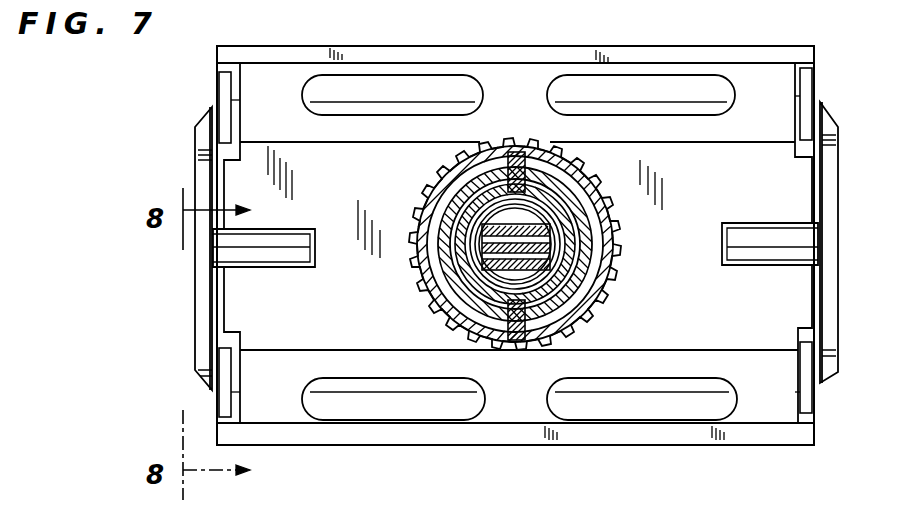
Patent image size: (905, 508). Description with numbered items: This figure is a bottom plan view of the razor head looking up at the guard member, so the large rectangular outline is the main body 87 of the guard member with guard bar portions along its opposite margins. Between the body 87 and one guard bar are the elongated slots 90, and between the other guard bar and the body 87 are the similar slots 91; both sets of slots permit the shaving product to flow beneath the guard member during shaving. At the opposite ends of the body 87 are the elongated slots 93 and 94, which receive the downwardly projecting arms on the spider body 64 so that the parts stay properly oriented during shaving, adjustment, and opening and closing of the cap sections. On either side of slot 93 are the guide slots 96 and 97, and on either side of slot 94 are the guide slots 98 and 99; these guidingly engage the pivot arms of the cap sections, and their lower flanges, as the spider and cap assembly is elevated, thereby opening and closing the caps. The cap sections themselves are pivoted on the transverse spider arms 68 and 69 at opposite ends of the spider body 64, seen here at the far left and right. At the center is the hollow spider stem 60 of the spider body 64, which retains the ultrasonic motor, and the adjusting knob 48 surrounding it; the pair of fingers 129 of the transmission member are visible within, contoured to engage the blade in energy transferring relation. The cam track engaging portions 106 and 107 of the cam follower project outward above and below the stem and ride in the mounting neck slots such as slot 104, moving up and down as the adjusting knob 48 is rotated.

The adjusting knob 48 is at (572, 153).
The hollow spider stem 60 is at (483, 273).
The spider body 64 is at (485, 240).
The transverse spider arm 68 is at (203, 297).
The transverse spider arm 69 is at (828, 288).
The main body 87 is at (792, 193).
The elongated slots 90 is at (700, 78).
The elongated slots 91 is at (574, 410).
The elongated slot 93 is at (818, 247).
The elongated slot 94 is at (237, 236).
The guide slot 96 is at (812, 92).
The guide slot 97 is at (812, 355).
The guide slot 98 is at (232, 130).
The guide slot 99 is at (240, 370).
The elongated slot 104 is at (575, 255).
The cam track engaging portion 106 is at (516, 150).
The cam track engaging portion 107 is at (517, 345).
The fingers 129 is at (487, 217).